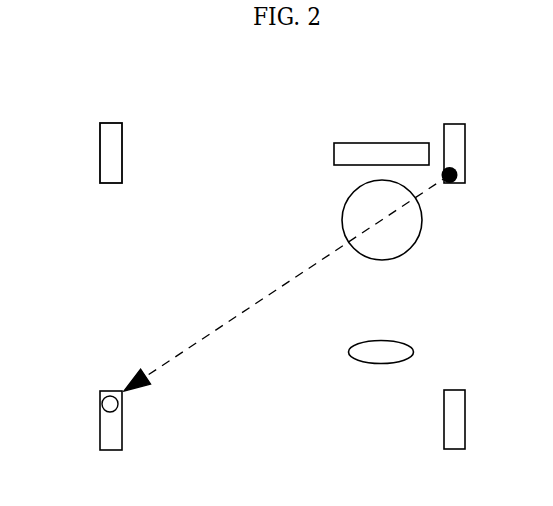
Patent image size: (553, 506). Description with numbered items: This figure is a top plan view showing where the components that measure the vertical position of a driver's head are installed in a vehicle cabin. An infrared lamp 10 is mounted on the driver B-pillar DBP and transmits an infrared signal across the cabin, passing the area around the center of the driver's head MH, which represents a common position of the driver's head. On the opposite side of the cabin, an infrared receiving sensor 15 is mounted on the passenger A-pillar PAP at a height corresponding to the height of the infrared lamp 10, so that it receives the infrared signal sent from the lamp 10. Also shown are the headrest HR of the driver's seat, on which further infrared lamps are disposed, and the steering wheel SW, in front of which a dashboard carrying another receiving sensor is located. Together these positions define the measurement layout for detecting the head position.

The infrared lamp 10 is at (457, 170).
The infrared receiving sensor 15 is at (102, 404).
The headrest HR is at (384, 143).
The driver B-pillar DBP is at (455, 124).
The center of the driver's head MH is at (422, 222).
The steering wheel SW is at (414, 352).
The passenger A-pillar PAP is at (100, 435).